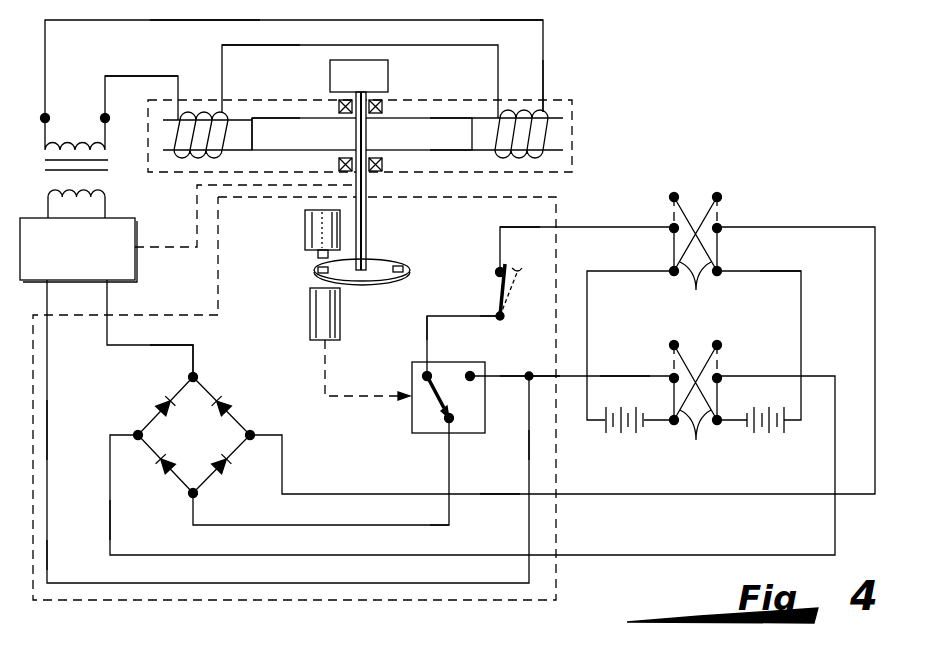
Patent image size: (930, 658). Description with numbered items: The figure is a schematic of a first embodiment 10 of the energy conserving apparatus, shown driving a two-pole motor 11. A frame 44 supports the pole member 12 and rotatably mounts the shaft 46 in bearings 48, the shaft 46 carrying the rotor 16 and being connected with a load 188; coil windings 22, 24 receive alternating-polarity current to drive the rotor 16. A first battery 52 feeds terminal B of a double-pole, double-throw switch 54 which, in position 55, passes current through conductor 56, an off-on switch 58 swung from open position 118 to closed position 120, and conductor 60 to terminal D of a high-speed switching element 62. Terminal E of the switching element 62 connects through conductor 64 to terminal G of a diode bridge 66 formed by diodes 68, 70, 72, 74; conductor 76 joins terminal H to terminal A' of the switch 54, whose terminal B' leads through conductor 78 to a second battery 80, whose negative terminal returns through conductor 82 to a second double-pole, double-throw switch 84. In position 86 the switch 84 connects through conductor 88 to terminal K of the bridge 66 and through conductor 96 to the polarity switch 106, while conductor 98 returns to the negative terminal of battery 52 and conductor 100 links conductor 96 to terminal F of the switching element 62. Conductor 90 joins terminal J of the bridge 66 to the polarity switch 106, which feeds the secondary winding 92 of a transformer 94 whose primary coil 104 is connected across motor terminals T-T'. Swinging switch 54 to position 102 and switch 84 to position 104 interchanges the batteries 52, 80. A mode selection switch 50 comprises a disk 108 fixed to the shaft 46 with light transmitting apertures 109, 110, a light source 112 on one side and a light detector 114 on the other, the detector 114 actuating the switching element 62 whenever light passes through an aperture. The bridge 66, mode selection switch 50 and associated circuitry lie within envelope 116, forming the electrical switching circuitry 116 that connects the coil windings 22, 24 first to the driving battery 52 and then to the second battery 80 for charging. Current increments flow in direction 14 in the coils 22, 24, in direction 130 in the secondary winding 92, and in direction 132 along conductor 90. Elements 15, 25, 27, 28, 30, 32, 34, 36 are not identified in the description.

The first embodiment of the energy conserving apparatus 10 is at (692, 100).
The two-pole motor 11 is at (585, 26).
The pole member 12 is at (565, 100).
The direction of current increment in coils 14 is at (30, 78).
The line 15 is at (145, 33).
The rotor 16 is at (330, 144).
The coil winding 22 is at (191, 112).
The coil winding 24 is at (511, 112).
The lead 25 is at (222, 55).
The lead 27 is at (105, 76).
The lead 28 is at (212, 20).
The south pole end 30 is at (471, 150).
The north pole end 32 is at (250, 118).
The pole face 34 is at (470, 118).
The pole face 36 is at (251, 150).
The frame 44 is at (565, 100).
The shaft 46 is at (366, 211).
The bearings 48 is at (338, 106).
The mode selection switch 50 is at (341, 424).
The first battery 52 is at (604, 444).
The double-pole, double-throw switch 54 is at (752, 193).
The position of switch 54 55 is at (691, 286).
The conductor 56 is at (602, 213).
The off-on switch 58 is at (485, 282).
The conductor 60 is at (425, 328).
The high-speed switching element 62 is at (398, 434).
The conductor 64 is at (449, 520).
The diode bridge 66 is at (130, 390).
The diode 68 is at (228, 468).
The diode 70 is at (232, 410).
The diode 72 is at (165, 400).
The diode 74 is at (160, 470).
The conductor 76 is at (500, 494).
The conductor 78 is at (797, 270).
The second electrical storage battery 80 is at (792, 442).
The conductor 82 is at (738, 426).
The double-pole, double-throw switch 84 is at (749, 335).
The position of switch 84 86 is at (696, 440).
The conductor 88 is at (110, 522).
The conductor 90 is at (195, 358).
The secondary winding 92 is at (76, 205).
The transformer 94 is at (140, 188).
The conductor 96 is at (47, 552).
The conductor 98 is at (658, 428).
The conductor 100 is at (527, 376).
The position of switch 54 102 is at (698, 196).
The primary coil 104 is at (70, 143).
The polarity switch 106 is at (135, 277).
The disk 108 is at (370, 262).
The light transmitting aperture 109 is at (398, 268).
The light transmitting aperture 110 is at (318, 271).
The light source 112 is at (305, 222).
The light detector 114 is at (310, 297).
The electrical switching circuitry 116 is at (557, 197).
The open position of off-on switch 118 is at (518, 262).
The closed position of off-on switch 120 is at (502, 299).
The direction of lag current increment 130 is at (62, 408).
The direction of current along conductor 90 132 is at (120, 333).
The load 188 is at (388, 71).